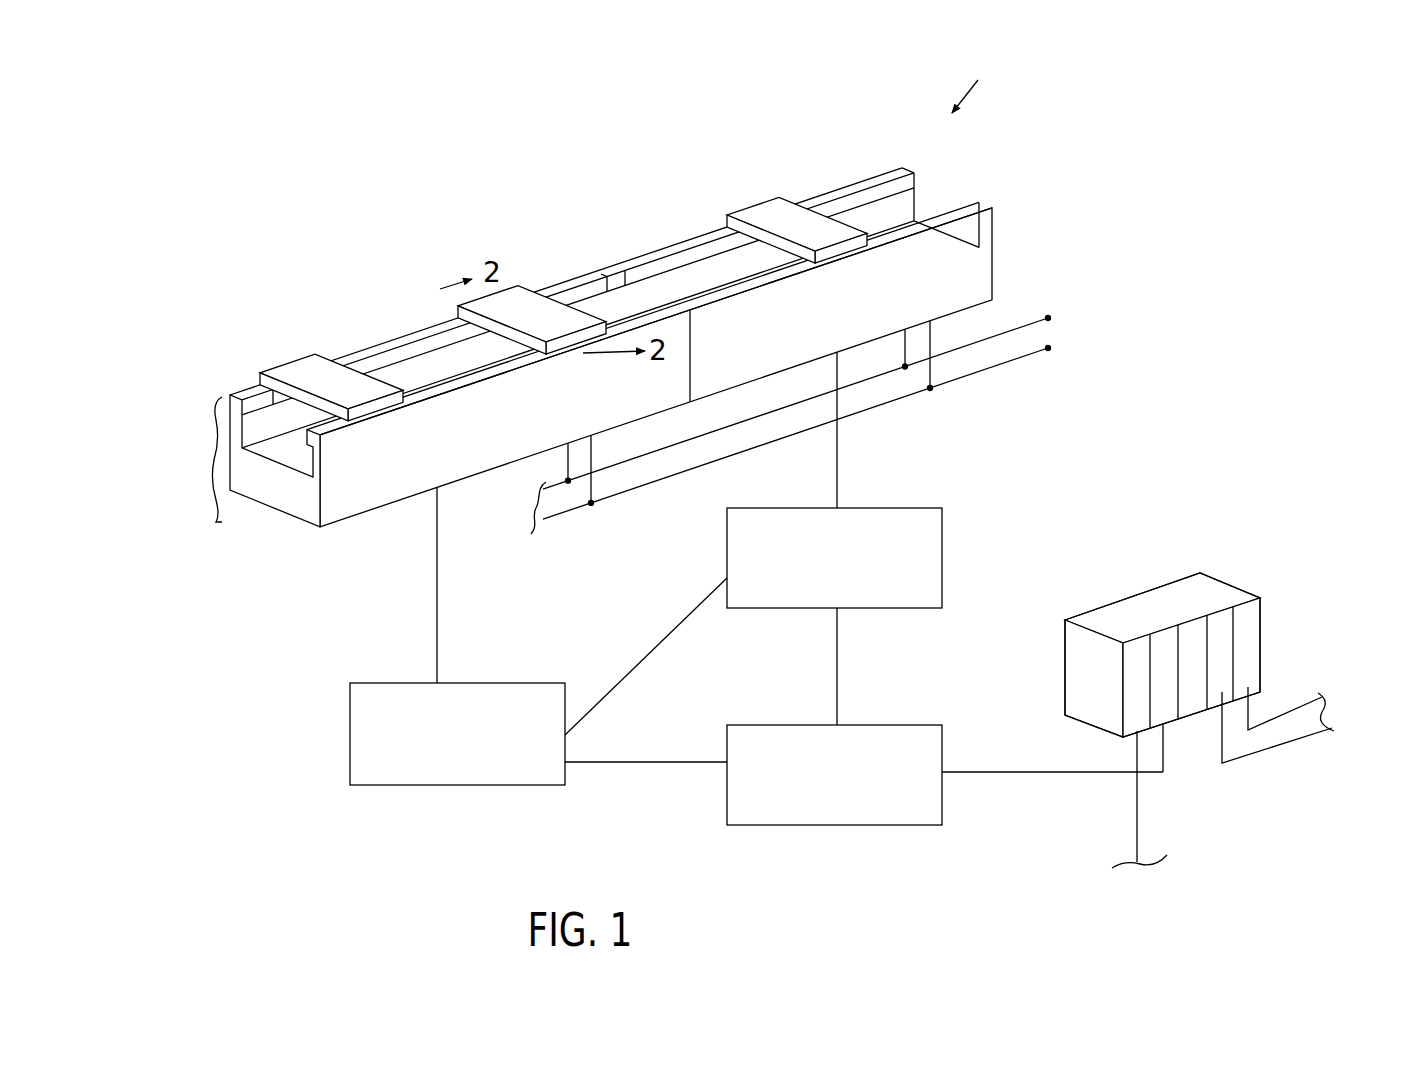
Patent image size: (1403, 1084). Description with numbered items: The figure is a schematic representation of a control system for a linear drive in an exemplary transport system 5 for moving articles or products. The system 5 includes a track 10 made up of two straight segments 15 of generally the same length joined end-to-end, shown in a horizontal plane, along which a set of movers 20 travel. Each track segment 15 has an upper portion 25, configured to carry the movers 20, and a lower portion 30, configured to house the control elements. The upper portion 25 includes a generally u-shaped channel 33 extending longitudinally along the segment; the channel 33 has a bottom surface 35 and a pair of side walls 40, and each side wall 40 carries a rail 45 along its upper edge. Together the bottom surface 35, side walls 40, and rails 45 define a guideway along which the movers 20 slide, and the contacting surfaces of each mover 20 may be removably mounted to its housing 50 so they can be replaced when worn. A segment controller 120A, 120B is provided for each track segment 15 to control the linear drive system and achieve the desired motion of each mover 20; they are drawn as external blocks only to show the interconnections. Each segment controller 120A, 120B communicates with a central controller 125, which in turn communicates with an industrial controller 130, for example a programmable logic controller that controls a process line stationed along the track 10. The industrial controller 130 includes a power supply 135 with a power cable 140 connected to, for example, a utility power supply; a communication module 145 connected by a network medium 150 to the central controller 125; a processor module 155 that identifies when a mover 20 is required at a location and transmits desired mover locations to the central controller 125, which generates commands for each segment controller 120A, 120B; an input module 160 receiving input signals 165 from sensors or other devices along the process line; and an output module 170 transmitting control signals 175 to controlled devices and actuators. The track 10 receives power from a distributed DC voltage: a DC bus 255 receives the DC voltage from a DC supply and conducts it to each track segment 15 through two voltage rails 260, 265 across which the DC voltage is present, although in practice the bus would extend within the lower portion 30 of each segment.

The transport system 5 is at (176, 714).
The track 10 is at (982, 81).
The track segment 15 is at (640, 254).
The mover 20 is at (302, 366).
The upper portion 25 is at (213, 422).
The lower portion 30 is at (213, 458).
The channel 33 is at (896, 211).
The bottom surface 35 is at (278, 455).
The side wall 40 is at (618, 297).
The rail 45 is at (814, 198).
The housing 50 is at (524, 416).
The segment controller 120A is at (467, 682).
The segment controller 120B is at (905, 507).
The central controller 125 is at (752, 826).
The industrial controller 130 is at (1174, 605).
The power supply 135 is at (1125, 601).
The power cable 140 is at (1140, 830).
The communication module 145 is at (1130, 643).
The network medium 150 is at (643, 655).
The processor module 155 is at (1196, 630).
The input module 160 is at (1222, 623).
The input signals 165 is at (1270, 750).
The output module 170 is at (1246, 612).
The control signals 175 is at (1290, 718).
The DC bus 255 is at (861, 381).
The voltage rail 260 is at (1018, 324).
The voltage rail 265 is at (1013, 362).